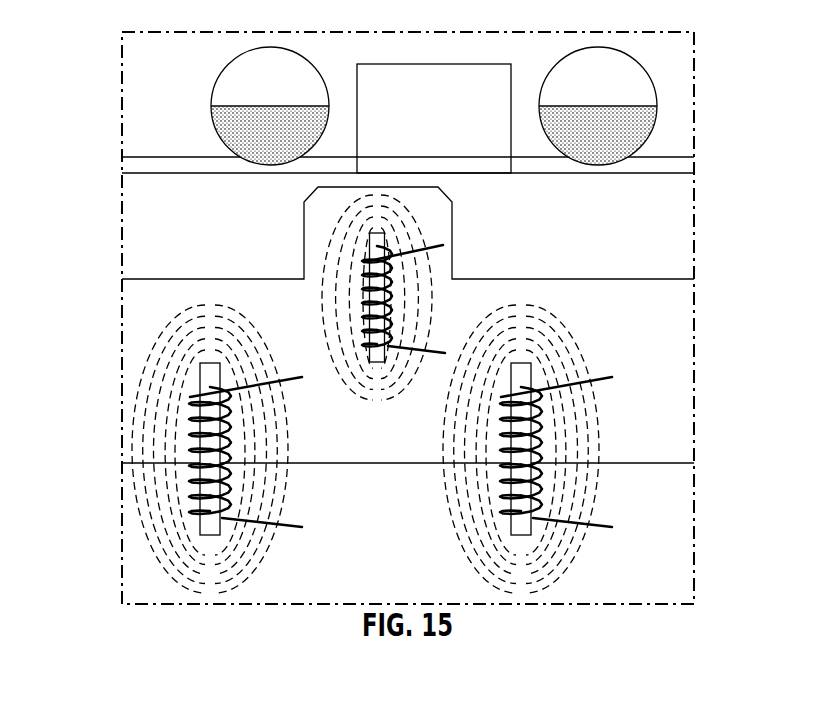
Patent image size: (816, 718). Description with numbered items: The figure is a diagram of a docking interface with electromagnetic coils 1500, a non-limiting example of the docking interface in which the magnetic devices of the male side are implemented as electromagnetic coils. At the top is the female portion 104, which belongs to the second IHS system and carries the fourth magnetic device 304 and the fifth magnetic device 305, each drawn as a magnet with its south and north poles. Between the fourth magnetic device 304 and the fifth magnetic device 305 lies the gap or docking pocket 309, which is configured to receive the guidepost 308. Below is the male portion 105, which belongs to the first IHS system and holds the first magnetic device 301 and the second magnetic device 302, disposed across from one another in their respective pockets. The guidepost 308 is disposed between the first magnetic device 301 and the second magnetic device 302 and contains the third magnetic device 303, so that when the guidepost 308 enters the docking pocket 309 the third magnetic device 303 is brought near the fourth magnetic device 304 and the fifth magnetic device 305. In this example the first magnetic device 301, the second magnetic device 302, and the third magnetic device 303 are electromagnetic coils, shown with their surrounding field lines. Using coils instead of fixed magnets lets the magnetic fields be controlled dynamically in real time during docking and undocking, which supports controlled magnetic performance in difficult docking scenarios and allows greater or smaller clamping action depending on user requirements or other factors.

The docking interface with electromagnetic coils 1500 is at (111, 27).
The female portion 104 is at (531, 127).
The male portion 105 is at (181, 279).
The first magnetic device 301 is at (200, 372).
The second magnetic device 302 is at (531, 370).
The third magnetic device 303 is at (368, 250).
The fourth magnetic device 304 is at (208, 79).
The fifth magnetic device 305 is at (651, 73).
The guidepost 308 is at (386, 182).
The docking pocket 309 is at (466, 184).